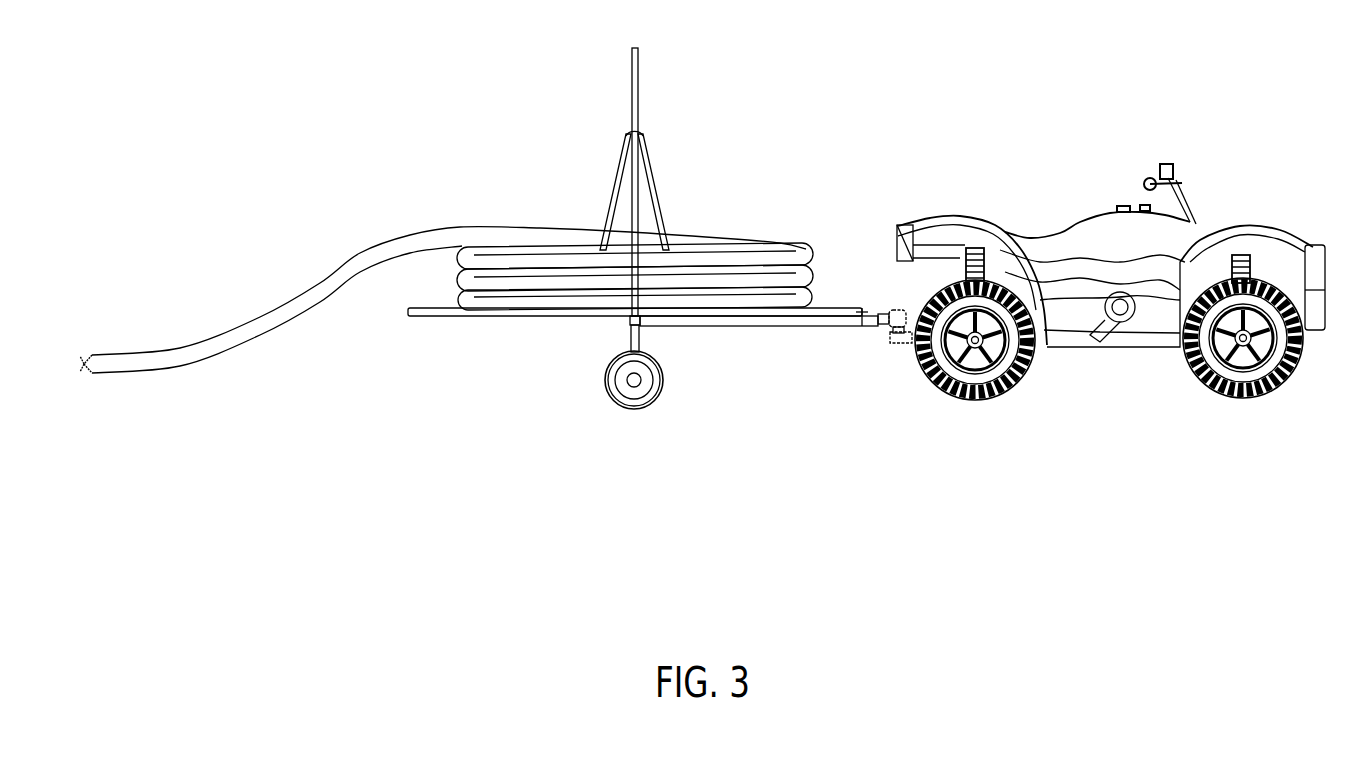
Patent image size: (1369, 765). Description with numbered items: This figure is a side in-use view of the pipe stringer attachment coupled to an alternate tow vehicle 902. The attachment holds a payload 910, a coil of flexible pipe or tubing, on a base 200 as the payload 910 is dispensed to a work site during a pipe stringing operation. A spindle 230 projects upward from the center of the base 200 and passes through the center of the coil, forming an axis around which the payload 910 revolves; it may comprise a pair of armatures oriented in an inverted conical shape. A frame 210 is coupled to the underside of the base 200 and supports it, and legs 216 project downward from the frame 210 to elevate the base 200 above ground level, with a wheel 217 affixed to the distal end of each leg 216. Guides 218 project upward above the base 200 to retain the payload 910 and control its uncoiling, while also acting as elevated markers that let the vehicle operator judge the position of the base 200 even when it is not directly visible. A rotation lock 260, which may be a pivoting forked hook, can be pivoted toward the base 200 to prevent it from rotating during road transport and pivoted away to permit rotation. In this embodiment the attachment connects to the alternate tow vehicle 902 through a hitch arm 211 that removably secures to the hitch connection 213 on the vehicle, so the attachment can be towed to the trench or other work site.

The base 200 is at (427, 316).
The frame 210 is at (728, 320).
The hitch arm 211 is at (895, 321).
The hitch connection 213 is at (898, 338).
The legs 216 is at (633, 342).
The wheel 217 is at (637, 398).
The guides 218 is at (633, 228).
The spindle 230 is at (628, 135).
The rotation lock 260 is at (862, 310).
The payload 910 is at (747, 250).
The alternate tow vehicle 902 is at (1078, 222).